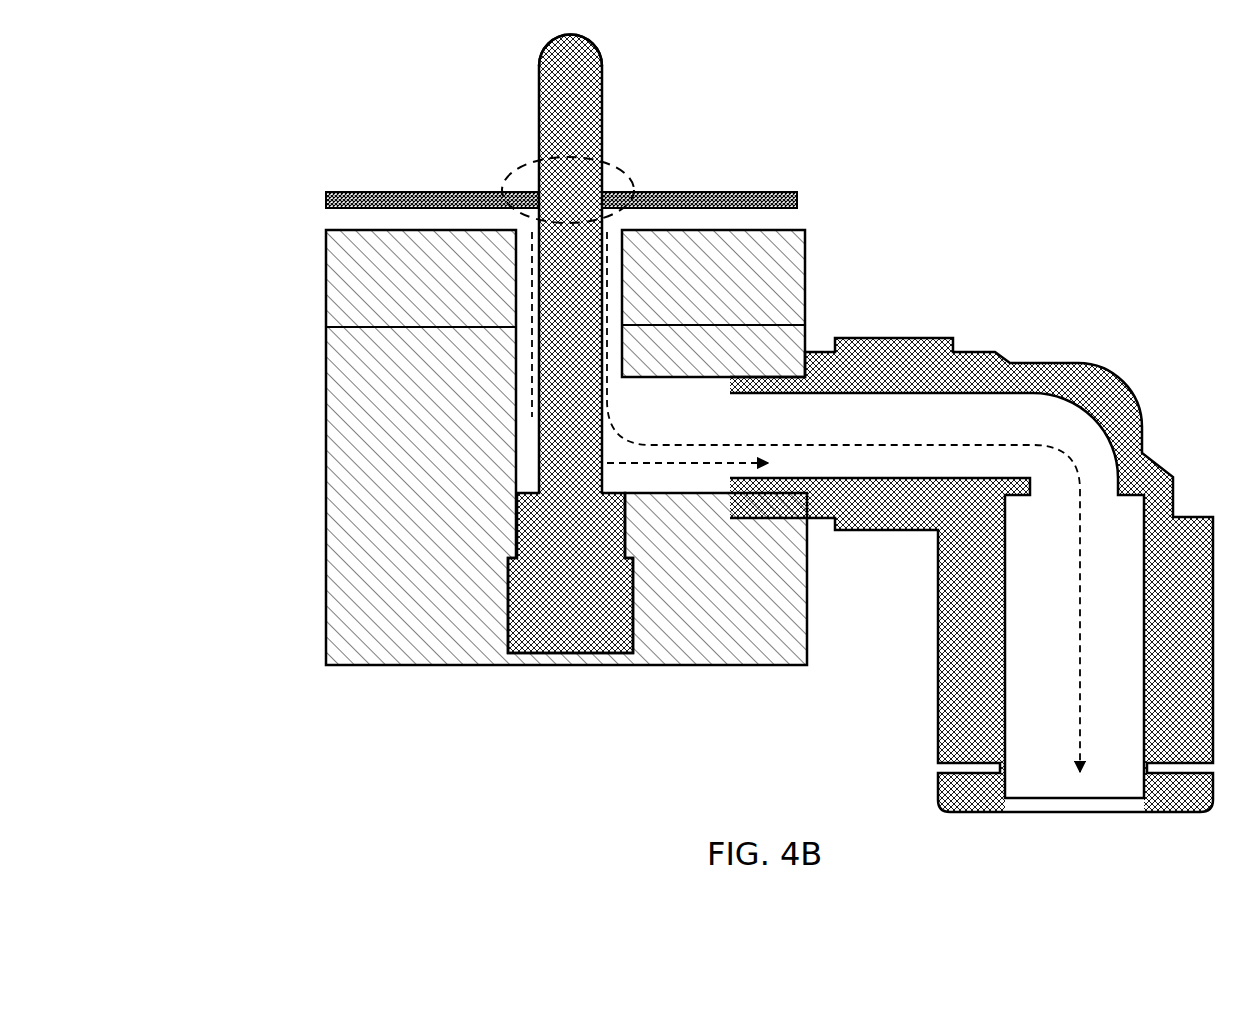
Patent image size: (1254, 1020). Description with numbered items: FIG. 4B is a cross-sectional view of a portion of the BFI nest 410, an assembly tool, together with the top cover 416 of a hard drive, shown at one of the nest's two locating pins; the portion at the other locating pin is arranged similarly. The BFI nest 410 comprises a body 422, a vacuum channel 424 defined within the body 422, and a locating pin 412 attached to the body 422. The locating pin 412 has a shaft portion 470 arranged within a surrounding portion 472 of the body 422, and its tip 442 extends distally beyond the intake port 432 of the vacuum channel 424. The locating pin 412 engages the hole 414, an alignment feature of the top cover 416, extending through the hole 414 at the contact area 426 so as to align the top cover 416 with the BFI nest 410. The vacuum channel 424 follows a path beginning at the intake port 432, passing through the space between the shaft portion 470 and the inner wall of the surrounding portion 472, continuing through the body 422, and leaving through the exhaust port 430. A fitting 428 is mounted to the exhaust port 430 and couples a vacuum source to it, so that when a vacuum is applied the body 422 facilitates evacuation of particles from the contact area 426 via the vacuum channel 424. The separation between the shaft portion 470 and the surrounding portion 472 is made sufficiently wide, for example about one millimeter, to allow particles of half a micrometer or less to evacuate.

The BFI nest 410 is at (290, 727).
The locating pin 412 is at (494, 397).
The hole 414 is at (537, 193).
The top cover 416 is at (810, 189).
The body 422 is at (481, 447).
The vacuum channel 424 is at (642, 477).
The contact area 426 is at (608, 161).
The fitting 428 is at (958, 333).
The exhaust port 430 is at (804, 493).
The intake port 432 is at (522, 228).
The tip 442 is at (610, 131).
The shaft portion 470 is at (560, 293).
The surrounding portion 472 is at (515, 318).